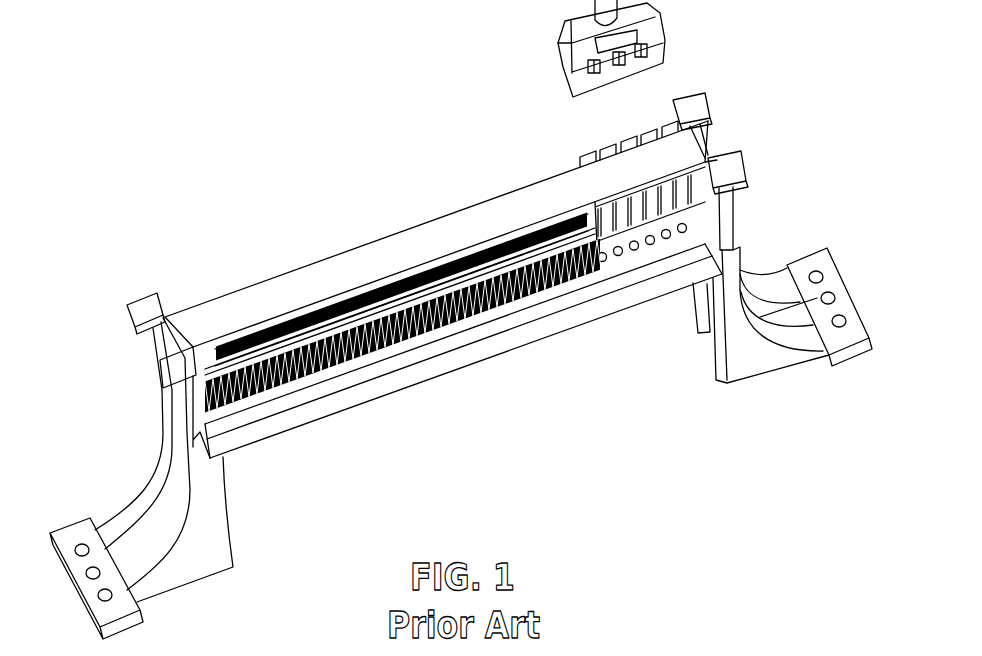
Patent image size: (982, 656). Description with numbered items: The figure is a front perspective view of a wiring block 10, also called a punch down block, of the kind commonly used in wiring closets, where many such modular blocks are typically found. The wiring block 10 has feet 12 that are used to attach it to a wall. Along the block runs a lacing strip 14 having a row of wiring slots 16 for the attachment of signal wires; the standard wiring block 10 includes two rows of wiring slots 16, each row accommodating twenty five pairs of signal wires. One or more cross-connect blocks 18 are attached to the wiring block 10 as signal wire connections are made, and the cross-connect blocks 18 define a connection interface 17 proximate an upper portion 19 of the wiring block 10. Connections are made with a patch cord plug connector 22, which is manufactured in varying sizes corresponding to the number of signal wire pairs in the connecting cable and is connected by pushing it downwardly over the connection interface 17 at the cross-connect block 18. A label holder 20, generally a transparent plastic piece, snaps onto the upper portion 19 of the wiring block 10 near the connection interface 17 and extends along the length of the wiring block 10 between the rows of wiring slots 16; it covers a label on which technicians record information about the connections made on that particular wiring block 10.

The wiring block 10 is at (268, 186).
The feet 12 is at (848, 289).
The lacing strip 14 is at (300, 395).
The wiring slots 16 is at (252, 395).
The connection interface 17 is at (745, 160).
The cross-connect block 18 is at (721, 215).
The upper portion 19 is at (710, 150).
The label holder 20 is at (398, 230).
The patch cord plug connector 22 is at (668, 33).